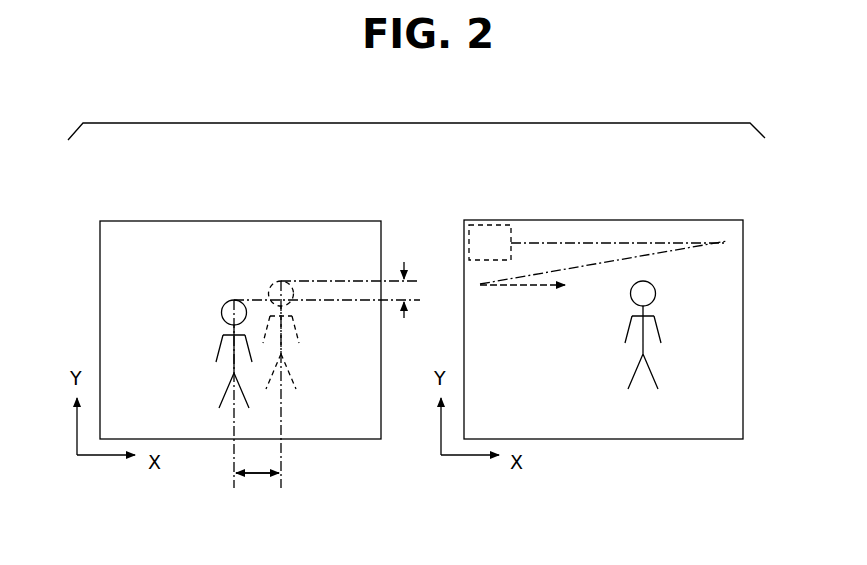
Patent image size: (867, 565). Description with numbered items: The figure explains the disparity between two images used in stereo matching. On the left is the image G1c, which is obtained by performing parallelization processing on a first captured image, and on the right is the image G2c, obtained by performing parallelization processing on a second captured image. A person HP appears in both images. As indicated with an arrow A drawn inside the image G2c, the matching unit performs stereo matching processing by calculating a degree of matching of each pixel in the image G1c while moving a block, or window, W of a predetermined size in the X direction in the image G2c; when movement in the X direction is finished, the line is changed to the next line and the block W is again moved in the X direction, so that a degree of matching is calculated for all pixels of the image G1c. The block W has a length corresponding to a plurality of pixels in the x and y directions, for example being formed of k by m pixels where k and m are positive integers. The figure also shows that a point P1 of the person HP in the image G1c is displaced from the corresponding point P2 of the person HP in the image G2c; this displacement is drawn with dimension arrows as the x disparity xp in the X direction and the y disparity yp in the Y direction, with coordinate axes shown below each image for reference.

The image G1c is at (242, 220).
The image G2c is at (604, 219).
The point P1 is at (232, 300).
The point P2 is at (284, 281).
The person HP is at (214, 342).
The block W is at (489, 222).
The arrow A is at (630, 243).
The y disparity yp is at (405, 273).
The x disparity xp is at (257, 498).